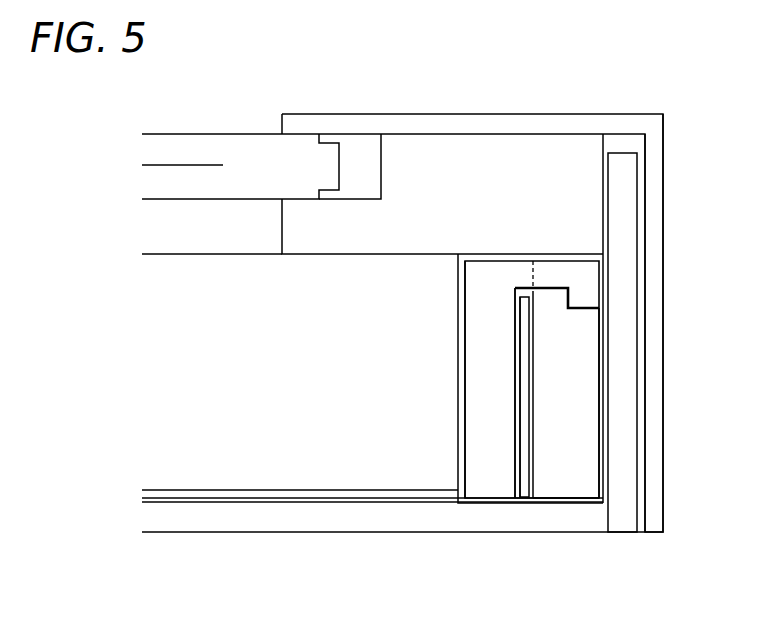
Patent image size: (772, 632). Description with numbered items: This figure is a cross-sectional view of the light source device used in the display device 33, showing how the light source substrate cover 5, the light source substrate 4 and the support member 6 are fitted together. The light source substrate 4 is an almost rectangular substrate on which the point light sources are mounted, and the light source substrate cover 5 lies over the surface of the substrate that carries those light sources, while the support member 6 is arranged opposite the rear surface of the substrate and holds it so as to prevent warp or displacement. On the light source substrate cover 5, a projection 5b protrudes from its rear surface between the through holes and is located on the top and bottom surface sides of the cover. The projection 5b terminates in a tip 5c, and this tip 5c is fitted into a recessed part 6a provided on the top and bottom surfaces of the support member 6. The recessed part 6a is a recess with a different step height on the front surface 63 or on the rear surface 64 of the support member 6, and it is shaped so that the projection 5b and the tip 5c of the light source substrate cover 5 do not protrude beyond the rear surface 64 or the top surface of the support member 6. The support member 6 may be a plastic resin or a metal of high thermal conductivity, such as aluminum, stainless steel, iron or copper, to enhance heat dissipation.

The light source substrate cover 5 is at (497, 270).
The projection 5b is at (548, 268).
The tip 5c is at (580, 300).
The support member 6 is at (590, 457).
The recessed part 6a is at (590, 310).
The rear surface 64 is at (590, 485).
The light source substrate 4 is at (525, 480).
The front surface 63 is at (530, 452).
The display device 33 is at (392, 555).